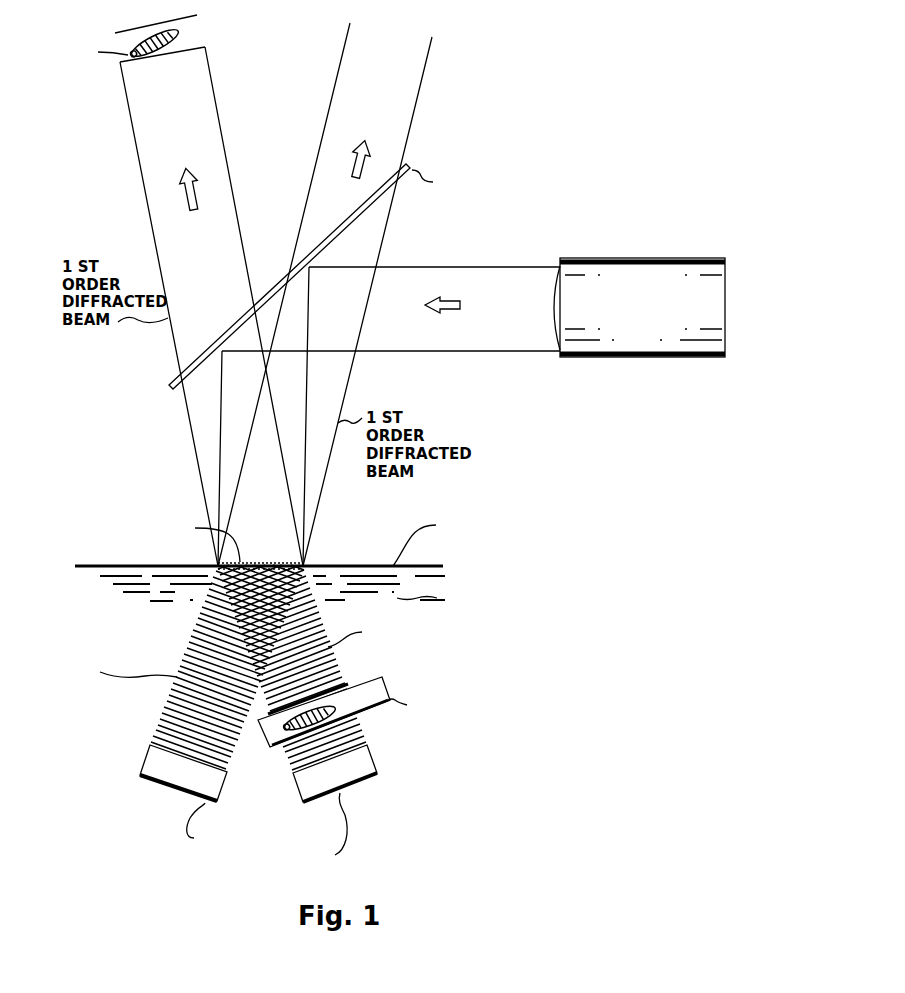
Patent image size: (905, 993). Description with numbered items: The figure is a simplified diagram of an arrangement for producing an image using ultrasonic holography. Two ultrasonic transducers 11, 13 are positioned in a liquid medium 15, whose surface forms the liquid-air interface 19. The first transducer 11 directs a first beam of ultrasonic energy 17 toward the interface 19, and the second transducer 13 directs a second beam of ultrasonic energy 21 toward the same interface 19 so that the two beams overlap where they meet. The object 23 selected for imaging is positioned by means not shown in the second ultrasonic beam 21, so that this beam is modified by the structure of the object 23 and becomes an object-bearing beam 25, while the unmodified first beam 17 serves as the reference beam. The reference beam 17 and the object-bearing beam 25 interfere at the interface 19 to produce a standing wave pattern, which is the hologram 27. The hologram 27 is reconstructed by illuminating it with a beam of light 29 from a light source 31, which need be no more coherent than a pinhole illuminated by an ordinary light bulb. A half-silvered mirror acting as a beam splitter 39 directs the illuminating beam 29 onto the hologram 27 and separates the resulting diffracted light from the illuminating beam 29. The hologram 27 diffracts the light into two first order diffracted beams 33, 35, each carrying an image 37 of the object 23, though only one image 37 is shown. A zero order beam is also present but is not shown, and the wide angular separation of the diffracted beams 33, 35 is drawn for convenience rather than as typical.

The ultrasonic transducer 11 is at (143, 773).
The ultrasonic transducer 13 is at (372, 761).
The liquid medium 15 is at (408, 588).
The first beam of ultrasonic energy 17 is at (167, 703).
The liquid-air interface 19 is at (368, 566).
The second beam of ultrasonic energy 21 is at (358, 727).
The object 23 is at (388, 680).
The object-bearing beam 25 is at (329, 613).
The hologram 27 is at (264, 561).
The beam of light 29 is at (484, 266).
The light source 31 is at (628, 258).
The first order diffracted beam 33 is at (146, 192).
The first order diffracted beam 35 is at (411, 122).
The image 37 is at (188, 32).
The beam splitter 39 is at (356, 214).